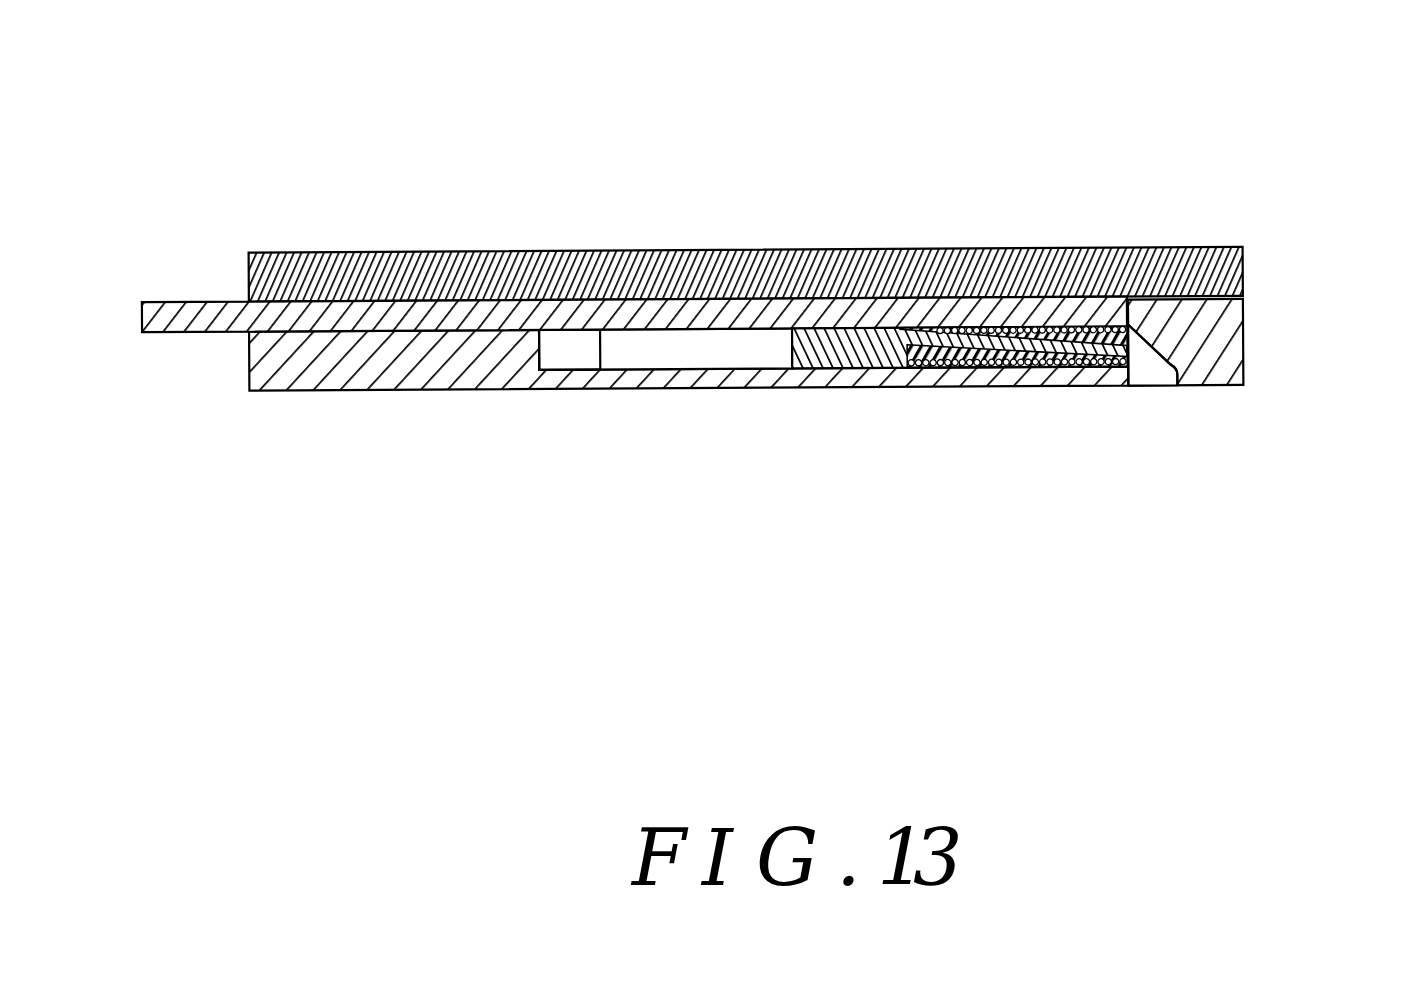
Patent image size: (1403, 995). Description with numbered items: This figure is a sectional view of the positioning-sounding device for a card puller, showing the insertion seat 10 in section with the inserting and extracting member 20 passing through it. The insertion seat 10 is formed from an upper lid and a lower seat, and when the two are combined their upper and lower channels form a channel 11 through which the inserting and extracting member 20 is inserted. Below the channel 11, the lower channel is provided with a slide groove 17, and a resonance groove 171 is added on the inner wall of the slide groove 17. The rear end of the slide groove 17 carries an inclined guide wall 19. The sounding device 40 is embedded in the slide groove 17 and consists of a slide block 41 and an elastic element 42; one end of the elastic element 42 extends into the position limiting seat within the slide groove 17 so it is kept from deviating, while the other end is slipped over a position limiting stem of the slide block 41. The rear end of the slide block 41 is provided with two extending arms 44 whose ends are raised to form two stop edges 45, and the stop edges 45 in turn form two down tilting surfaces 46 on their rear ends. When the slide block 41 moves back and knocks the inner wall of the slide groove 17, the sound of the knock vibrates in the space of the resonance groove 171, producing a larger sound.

The insertion seat 10 is at (1240, 225).
The channel 11 is at (343, 332).
The slide groove 17 is at (697, 345).
The resonance groove 171 is at (552, 358).
The inclined guide wall 19 is at (1160, 357).
The inserting and extracting member 20 is at (177, 298).
The sounding device 40 is at (959, 375).
The slide block 41 is at (822, 345).
The elastic element 42 is at (964, 356).
The extending arms 44 is at (982, 335).
The stop edges 45 is at (1134, 328).
The down tilting surfaces 46 is at (1147, 330).